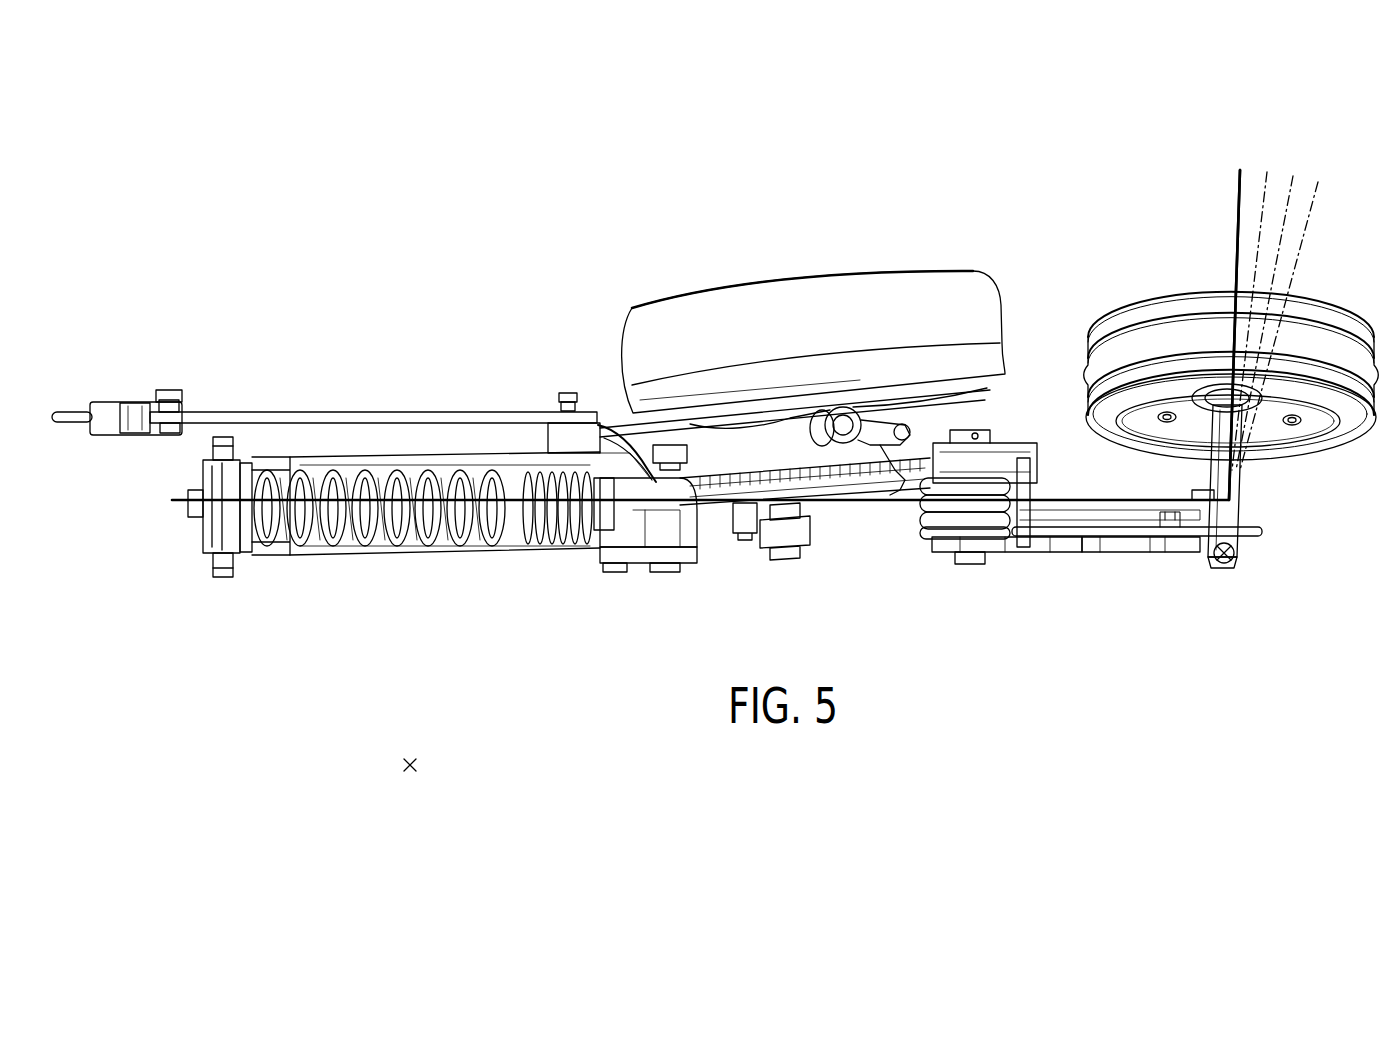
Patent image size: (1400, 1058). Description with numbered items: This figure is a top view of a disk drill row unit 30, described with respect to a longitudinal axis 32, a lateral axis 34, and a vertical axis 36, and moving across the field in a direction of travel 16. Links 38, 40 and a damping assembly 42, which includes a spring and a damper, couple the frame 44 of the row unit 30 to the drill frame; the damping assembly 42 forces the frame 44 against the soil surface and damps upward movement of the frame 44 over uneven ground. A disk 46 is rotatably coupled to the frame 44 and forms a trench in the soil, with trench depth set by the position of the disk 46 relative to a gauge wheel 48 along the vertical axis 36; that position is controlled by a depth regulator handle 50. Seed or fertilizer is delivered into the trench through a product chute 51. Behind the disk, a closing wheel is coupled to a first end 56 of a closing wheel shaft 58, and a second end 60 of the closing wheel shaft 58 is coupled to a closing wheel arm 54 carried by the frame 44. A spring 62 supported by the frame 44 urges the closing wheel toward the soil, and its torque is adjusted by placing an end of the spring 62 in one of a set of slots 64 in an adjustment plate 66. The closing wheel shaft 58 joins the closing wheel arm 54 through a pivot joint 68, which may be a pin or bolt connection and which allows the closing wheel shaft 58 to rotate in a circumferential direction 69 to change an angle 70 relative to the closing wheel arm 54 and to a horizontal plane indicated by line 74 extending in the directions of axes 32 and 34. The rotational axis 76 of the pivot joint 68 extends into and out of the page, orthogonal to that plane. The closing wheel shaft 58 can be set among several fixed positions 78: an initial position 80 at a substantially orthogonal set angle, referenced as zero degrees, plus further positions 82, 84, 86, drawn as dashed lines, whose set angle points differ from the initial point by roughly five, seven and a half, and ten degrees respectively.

The direction of travel 16 is at (172, 765).
The row unit 30 is at (422, 306).
The longitudinal axis 32 is at (410, 765).
The lateral axis 34 is at (410, 765).
The vertical axis 36 is at (418, 766).
The link 38 is at (248, 553).
The link 40 is at (322, 412).
The damping assembly 42 is at (458, 553).
The frame 44 is at (748, 540).
The disk 46 is at (605, 428).
The gauge wheel 48 is at (866, 274).
The depth regulator handle 50 is at (797, 533).
The product chute 51 is at (845, 410).
The closing wheel arm 54 is at (1000, 553).
The first end 56 is at (1218, 422).
The closing wheel shaft 58 is at (1240, 486).
The second end 60 is at (1252, 553).
The spring 62 is at (920, 536).
The slots 64 is at (1155, 536).
The adjustment plate 66 is at (1177, 553).
The pivot joint 68 is at (1222, 568).
The circumferential direction 69 is at (382, 752).
The angle 70 is at (1068, 500).
The line 74 is at (1090, 506).
The rotational axis 76 is at (1236, 557).
The fixed positions 78 is at (1238, 200).
The initial position 80 is at (1238, 200).
The position 82 is at (1262, 183).
The position 84 is at (1292, 195).
The position 86 is at (1313, 200).